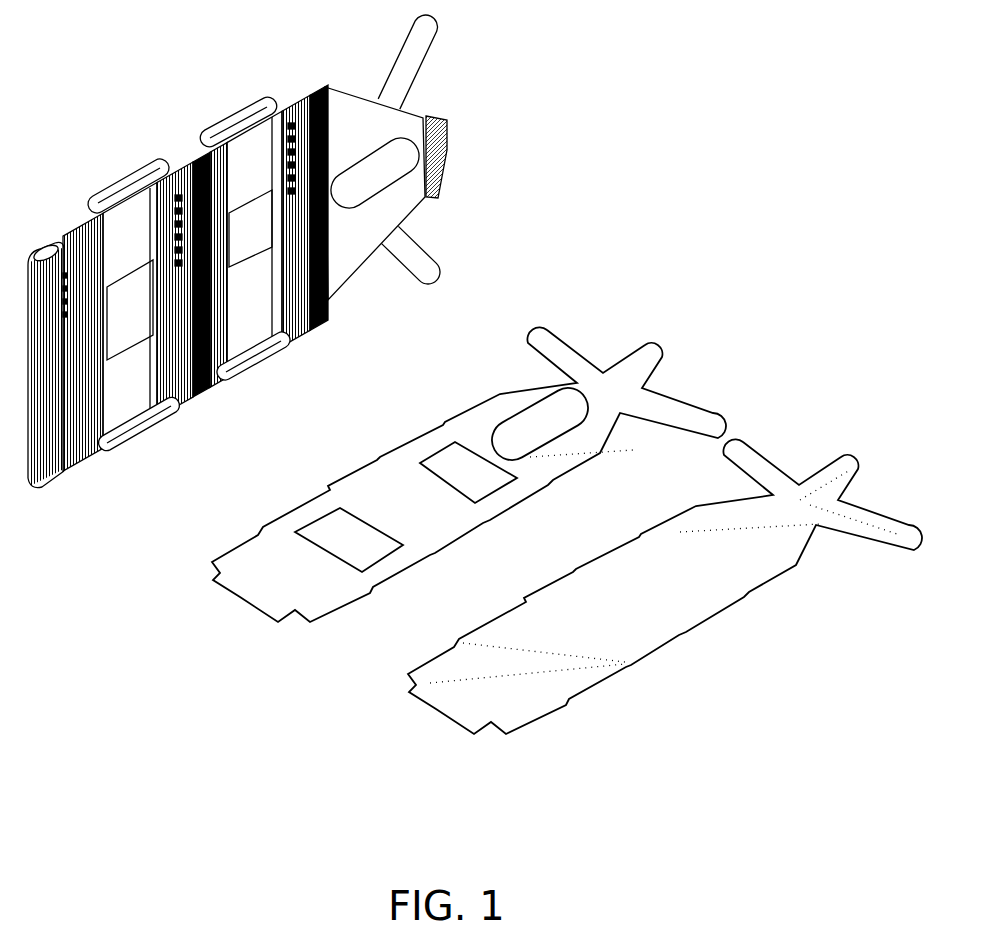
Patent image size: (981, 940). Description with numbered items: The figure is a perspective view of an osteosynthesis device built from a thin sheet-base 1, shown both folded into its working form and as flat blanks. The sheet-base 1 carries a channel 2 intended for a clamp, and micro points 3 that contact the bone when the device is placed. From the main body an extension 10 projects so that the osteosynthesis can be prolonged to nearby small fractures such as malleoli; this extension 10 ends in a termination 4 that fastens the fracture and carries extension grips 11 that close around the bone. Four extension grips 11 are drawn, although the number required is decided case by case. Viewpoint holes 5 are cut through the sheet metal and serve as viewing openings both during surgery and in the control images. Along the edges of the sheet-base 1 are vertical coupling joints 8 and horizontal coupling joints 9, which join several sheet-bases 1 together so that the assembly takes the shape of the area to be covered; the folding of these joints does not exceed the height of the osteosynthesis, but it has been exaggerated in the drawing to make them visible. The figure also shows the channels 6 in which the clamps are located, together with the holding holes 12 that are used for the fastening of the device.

The thin sheet-base 1 is at (512, 459).
The channel 2 is at (219, 264).
The micro points 3 is at (275, 275).
The termination 4 is at (658, 279).
The viewpoint holes 5 is at (378, 355).
The channels 6 is at (288, 208).
The vertical coupling joints 8 is at (238, 312).
The horizontal coupling joints 9 is at (138, 392).
The extension 10 is at (423, 215).
The extension grips 11 is at (552, 236).
The holding holes 12 is at (221, 333).